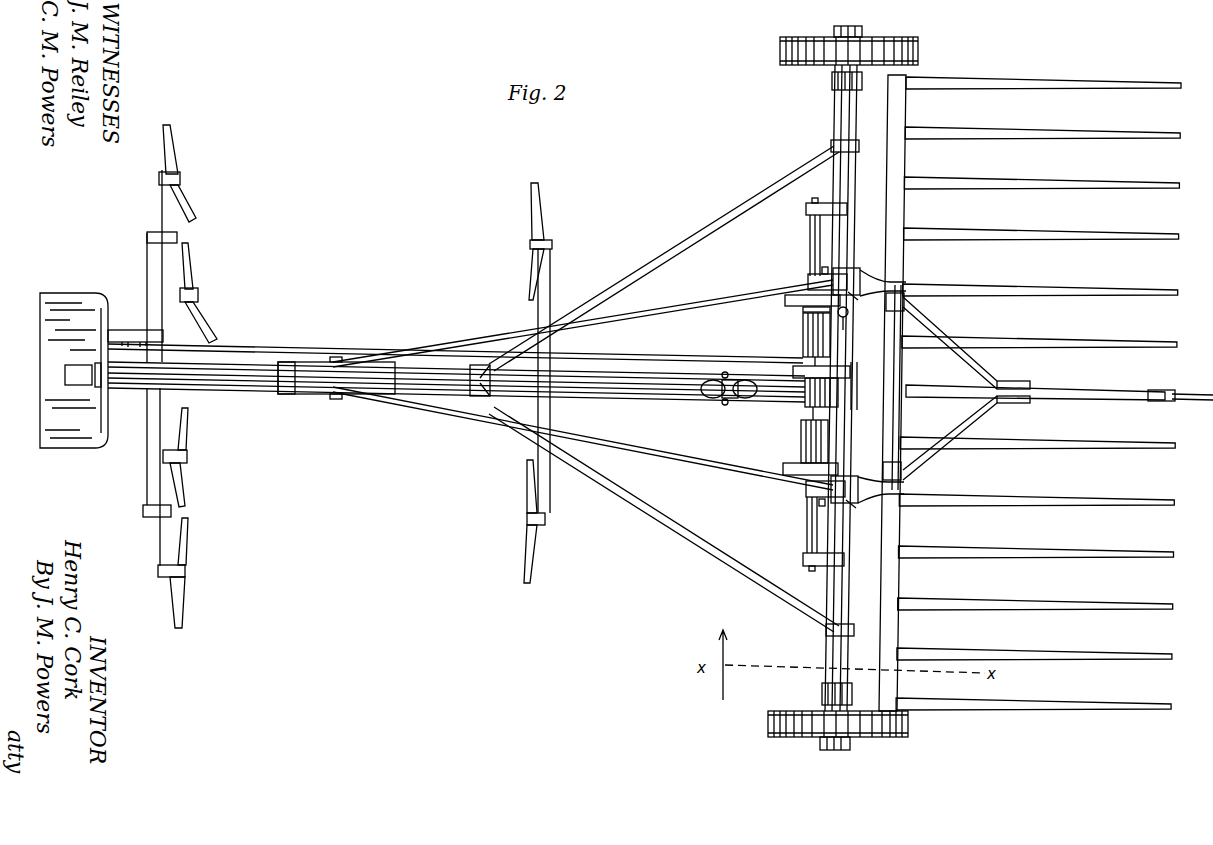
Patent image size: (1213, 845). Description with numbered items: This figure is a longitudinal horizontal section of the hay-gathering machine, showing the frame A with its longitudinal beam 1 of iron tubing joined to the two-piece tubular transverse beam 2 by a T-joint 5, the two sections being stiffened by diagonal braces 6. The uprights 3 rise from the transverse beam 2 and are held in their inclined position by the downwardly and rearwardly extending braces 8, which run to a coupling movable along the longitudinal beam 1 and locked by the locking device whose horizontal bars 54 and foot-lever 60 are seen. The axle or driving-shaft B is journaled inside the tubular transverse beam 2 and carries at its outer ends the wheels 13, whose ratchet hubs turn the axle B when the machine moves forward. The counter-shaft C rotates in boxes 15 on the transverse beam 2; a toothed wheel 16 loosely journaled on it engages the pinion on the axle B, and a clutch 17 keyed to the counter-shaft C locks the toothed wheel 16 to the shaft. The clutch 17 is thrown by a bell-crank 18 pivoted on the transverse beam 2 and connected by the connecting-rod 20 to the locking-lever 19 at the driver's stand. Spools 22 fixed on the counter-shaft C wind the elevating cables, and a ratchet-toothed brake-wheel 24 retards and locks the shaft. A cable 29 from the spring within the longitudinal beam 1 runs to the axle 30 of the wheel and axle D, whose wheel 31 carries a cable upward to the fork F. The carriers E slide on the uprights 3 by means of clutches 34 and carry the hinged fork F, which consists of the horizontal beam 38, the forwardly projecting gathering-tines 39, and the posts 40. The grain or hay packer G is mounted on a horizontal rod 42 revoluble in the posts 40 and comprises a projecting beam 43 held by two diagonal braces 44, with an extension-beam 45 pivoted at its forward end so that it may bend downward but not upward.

The longitudinal beam 1 is at (456, 377).
The transverse beam 2 is at (838, 132).
The uprights 3 is at (856, 410).
The T-joint 5 is at (857, 390).
The diagonal braces 6 is at (667, 391).
The braces 8 is at (583, 385).
The wheels 13 is at (829, 388).
The boxes 15 is at (806, 209).
The toothed wheel 16 is at (802, 306).
The clutch 17 is at (803, 309).
The bell-crank 18 is at (846, 324).
The locking-lever 19 is at (135, 346).
The connecting-rod 20 is at (455, 346).
The spools 22 is at (803, 332).
The brake-wheel 24 is at (783, 466).
The cable 29 is at (750, 405).
The axle 30 is at (805, 401).
The wheel 31 is at (793, 372).
The clutches 34 is at (822, 278).
The horizontal beam 38 is at (906, 158).
The gathering-tines 39 is at (1038, 393).
The posts 40 is at (895, 388).
The horizontal rod 42 is at (903, 370).
The projecting beam 43 is at (1122, 404).
The diagonal braces 44 is at (966, 388).
The extension-beam 45 is at (1192, 405).
The horizontal bars 54 is at (383, 387).
The foot-lever 60 is at (74, 370).
The frame A is at (456, 386).
The axle or driving-shaft B is at (842, 389).
The counter-shaft C is at (810, 243).
The wheel and axle D is at (822, 390).
The carriers E is at (852, 373).
The fork F is at (1030, 404).
The grain or hay packer G is at (1059, 392).